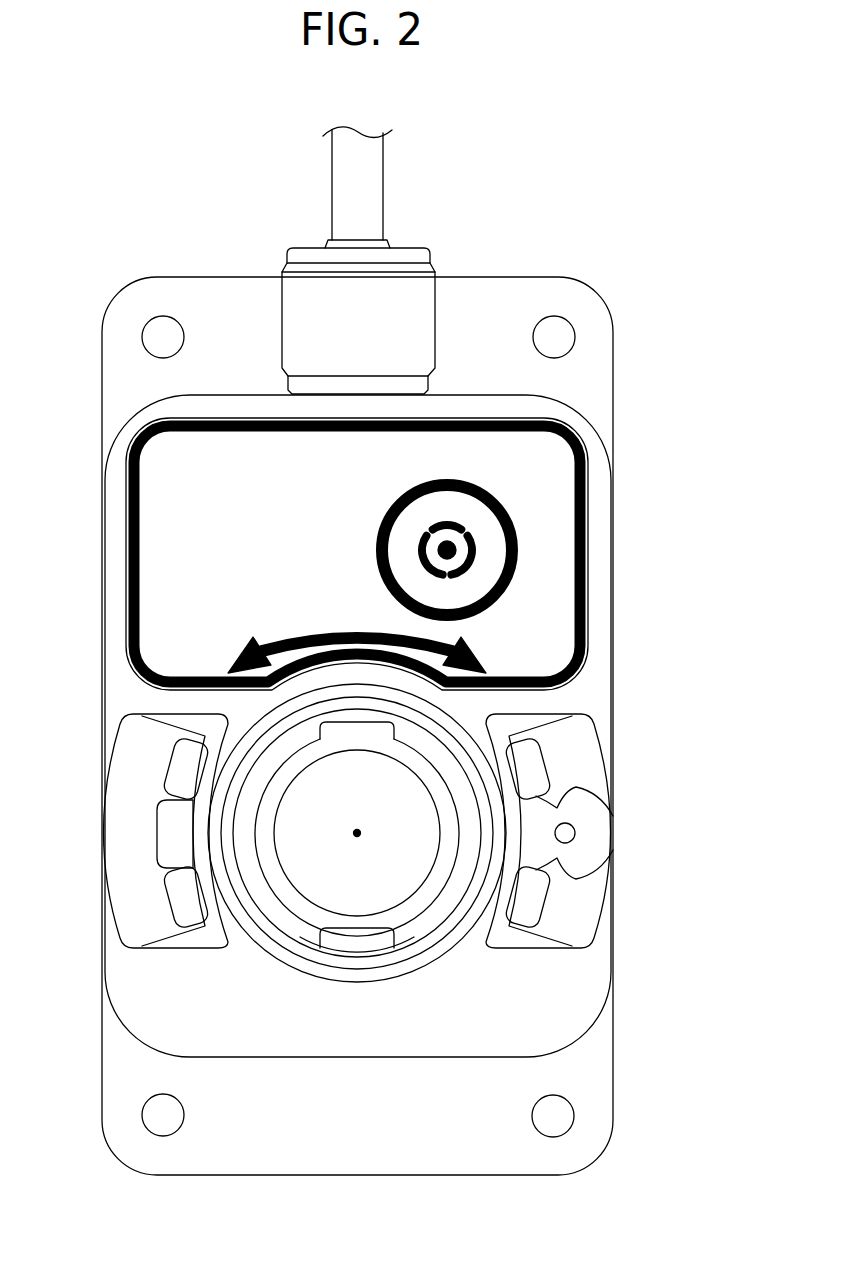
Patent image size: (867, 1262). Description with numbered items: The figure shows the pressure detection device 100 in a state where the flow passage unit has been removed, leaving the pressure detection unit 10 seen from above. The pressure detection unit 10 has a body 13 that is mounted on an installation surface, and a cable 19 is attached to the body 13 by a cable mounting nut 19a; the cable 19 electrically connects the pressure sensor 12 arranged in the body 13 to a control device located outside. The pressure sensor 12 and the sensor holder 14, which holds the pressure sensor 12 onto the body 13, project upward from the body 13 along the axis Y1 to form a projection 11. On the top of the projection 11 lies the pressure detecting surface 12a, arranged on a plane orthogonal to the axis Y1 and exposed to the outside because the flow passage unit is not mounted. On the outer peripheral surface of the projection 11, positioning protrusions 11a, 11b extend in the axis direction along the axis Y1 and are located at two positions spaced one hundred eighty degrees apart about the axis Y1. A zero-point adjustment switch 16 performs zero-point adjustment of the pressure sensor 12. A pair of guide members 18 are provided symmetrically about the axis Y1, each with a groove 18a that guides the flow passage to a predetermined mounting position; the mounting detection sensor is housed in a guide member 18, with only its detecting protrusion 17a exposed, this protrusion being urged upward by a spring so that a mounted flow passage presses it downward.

The pressure detection device 100 is at (653, 216).
The pressure detection unit 10 is at (92, 445).
The projection 11 is at (286, 932).
The positioning protrusion 11a is at (338, 948).
The positioning protrusion 11b is at (354, 720).
The pressure sensor 12 is at (403, 905).
The pressure detecting surface 12a is at (418, 878).
The body 13 is at (614, 621).
The sensor holder 14 is at (386, 942).
The zero-point adjustment switch 16 is at (475, 487).
The detecting protrusion 17a is at (576, 830).
The guide member 18 is at (118, 750).
The groove 18a is at (157, 803).
The cable 19 is at (384, 190).
The cable mounting nut 19a is at (434, 300).
The axis Y1 is at (361, 833).